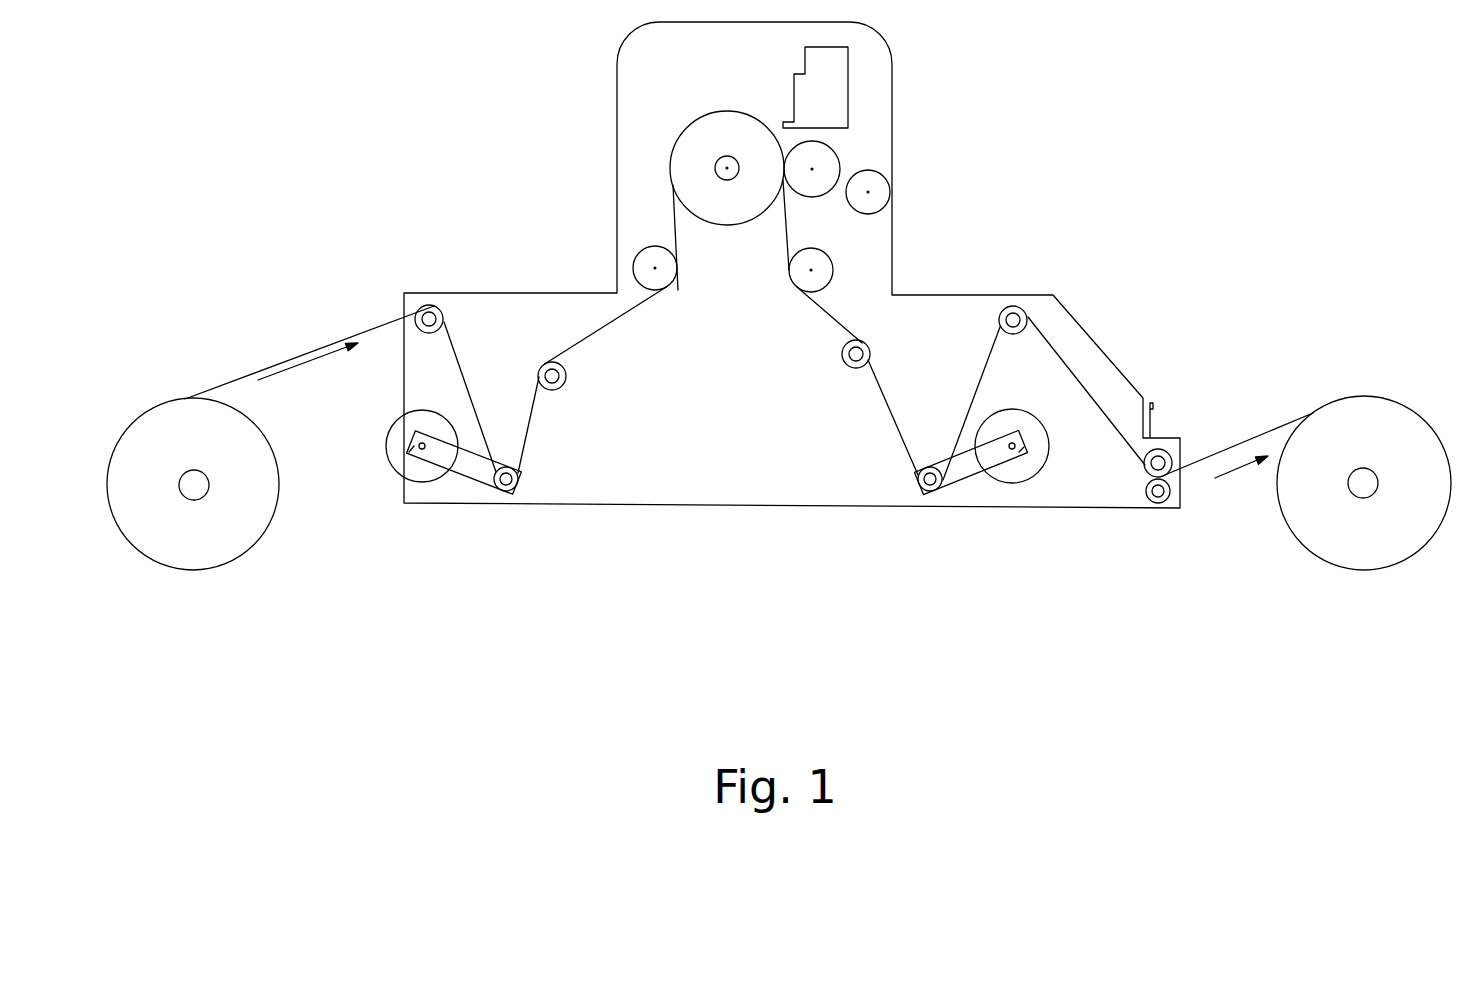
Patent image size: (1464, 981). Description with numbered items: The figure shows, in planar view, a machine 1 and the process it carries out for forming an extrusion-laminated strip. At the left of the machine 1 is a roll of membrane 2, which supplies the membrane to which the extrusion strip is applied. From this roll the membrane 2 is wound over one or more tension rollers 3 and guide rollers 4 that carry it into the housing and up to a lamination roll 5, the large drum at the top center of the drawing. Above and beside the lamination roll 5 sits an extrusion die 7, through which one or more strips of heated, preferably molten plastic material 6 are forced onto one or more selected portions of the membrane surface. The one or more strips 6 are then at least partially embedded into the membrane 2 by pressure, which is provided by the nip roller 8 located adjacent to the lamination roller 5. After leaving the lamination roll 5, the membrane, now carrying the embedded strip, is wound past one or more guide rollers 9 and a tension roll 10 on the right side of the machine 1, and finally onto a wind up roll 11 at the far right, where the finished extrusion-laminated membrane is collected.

The machine 1 is at (424, 220).
The roll of membrane 2 is at (123, 533).
The tension rollers 3 is at (563, 390).
The guide rollers 4 is at (678, 290).
The lamination roll 5 is at (673, 148).
The strips of heated plastic material 6 is at (782, 140).
The extrusion die 7 is at (848, 105).
The nip roller 8 is at (822, 197).
The guide rollers 9 is at (789, 270).
The tension roll 10 is at (925, 500).
The wind up roll 11 is at (1362, 539).